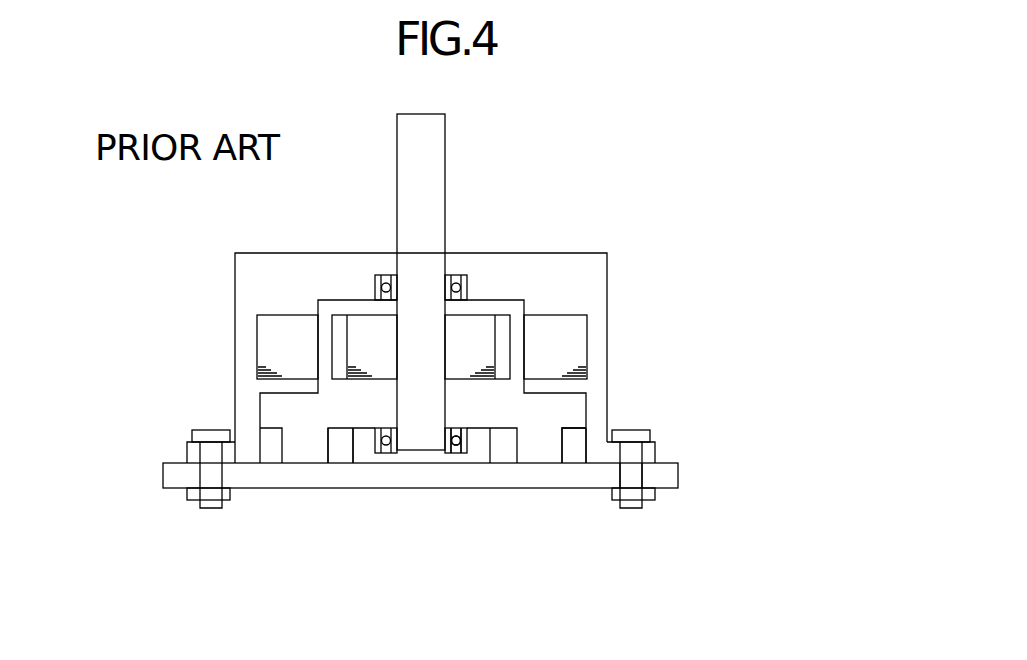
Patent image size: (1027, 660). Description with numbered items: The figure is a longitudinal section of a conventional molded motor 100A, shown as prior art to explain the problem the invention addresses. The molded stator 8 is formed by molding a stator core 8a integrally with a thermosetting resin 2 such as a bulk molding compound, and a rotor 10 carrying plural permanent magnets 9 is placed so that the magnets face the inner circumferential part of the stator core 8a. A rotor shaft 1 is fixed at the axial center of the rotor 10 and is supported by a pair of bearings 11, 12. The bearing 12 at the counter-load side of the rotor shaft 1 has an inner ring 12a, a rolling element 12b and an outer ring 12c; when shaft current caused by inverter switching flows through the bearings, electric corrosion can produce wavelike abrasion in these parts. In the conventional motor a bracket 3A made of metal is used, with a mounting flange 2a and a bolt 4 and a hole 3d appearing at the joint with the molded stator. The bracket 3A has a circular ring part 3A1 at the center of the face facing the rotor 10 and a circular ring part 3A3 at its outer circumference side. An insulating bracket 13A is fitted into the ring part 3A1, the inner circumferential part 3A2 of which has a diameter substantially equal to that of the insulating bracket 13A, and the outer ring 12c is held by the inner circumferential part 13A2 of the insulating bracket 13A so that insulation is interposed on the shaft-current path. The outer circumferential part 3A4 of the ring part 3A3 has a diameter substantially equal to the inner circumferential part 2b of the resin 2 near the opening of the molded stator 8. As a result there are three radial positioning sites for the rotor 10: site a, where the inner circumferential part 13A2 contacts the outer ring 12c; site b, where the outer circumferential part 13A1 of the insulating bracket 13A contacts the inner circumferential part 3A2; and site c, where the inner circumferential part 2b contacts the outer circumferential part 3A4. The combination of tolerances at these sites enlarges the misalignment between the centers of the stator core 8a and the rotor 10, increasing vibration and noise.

The conventional molded motor 100A is at (597, 161).
The rotor shaft 1 is at (447, 182).
The thermosetting resin 2 is at (597, 272).
The housing flange 2a is at (652, 457).
The inner circumferential part 2b is at (575, 430).
The bracket 3A is at (676, 477).
The through hole 3d is at (644, 477).
The bolt 4 is at (655, 445).
The molded stator 8 is at (597, 300).
The stator core 8a is at (575, 330).
The permanent magnets 9 is at (503, 317).
The rotor 10 is at (361, 328).
The bearing 11 is at (470, 288).
The bearing 12 is at (537, 517).
The inner ring 12a is at (447, 450).
The rolling element 12b is at (457, 450).
The outer ring 12c is at (467, 440).
The insulating bracket 13A is at (342, 452).
The outer circumferential part 13A1 is at (325, 447).
The inner circumferential part 13A2 is at (353, 447).
The circular ring part 3A1 is at (513, 428).
The inner circumferential part 3A2 is at (483, 428).
The circular ring part 3A3 is at (577, 452).
The outer circumferential part 3A4 is at (588, 457).
The positioning site a is at (379, 408).
The positioning site b is at (346, 408).
The positioning site c is at (272, 408).